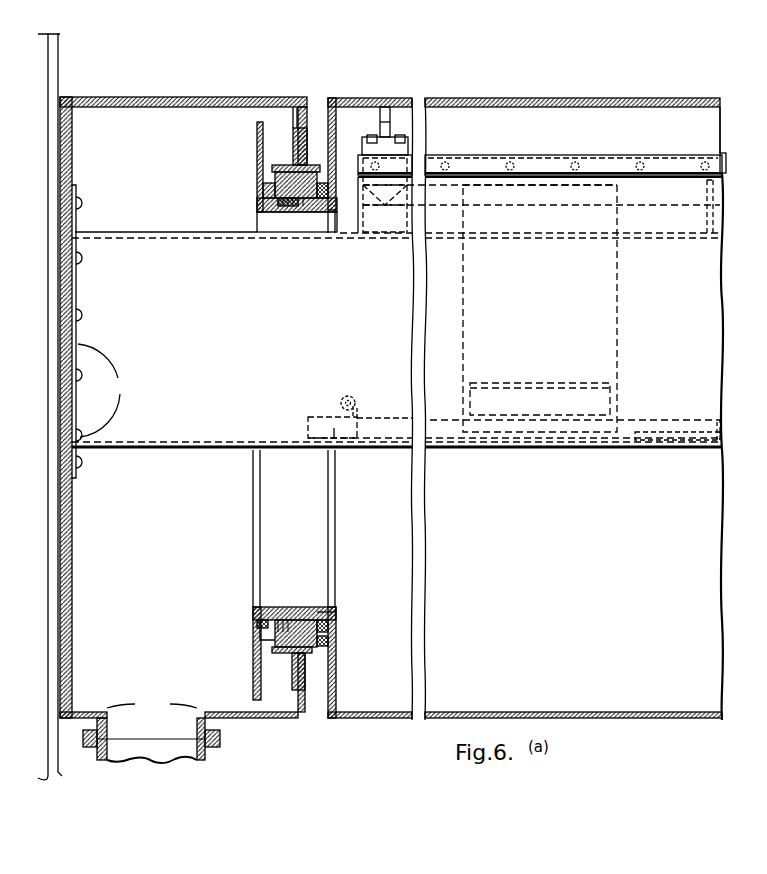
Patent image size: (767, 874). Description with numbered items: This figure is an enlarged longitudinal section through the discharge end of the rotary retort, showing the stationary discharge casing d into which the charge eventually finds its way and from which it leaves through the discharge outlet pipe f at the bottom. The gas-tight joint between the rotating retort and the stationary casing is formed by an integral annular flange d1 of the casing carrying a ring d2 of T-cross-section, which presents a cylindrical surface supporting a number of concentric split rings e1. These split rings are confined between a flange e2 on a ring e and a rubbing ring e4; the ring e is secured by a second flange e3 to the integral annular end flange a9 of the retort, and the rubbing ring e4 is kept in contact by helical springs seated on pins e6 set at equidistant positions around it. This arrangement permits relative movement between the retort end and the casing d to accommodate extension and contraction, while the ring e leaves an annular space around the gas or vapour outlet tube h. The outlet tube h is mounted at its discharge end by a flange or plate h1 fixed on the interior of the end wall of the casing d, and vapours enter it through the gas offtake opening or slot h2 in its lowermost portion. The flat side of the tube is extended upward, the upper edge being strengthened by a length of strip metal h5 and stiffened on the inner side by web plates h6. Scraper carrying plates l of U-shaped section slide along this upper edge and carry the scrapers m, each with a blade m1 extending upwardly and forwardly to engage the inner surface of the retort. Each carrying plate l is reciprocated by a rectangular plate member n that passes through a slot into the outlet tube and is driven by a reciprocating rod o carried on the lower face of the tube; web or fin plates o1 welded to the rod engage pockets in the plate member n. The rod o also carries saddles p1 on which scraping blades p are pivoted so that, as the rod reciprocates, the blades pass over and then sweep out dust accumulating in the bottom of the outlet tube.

The stationary discharge casing d is at (198, 97).
The integral annular flange d1 is at (310, 100).
The ring of T-cross-section d2 is at (297, 105).
The integral annular end flange a9 is at (337, 127).
The ring e is at (306, 212).
The concentric split rings e1 is at (287, 607).
The flange e2 is at (258, 180).
The second flange e3 is at (325, 620).
The rubbing ring e4 is at (318, 647).
The pins e6 is at (338, 212).
The scrapers m is at (408, 150).
The blade m1 is at (386, 106).
The scraper carrying plates l is at (483, 158).
The gas or vapour outlet tube h is at (212, 408).
The flange or plate h1 is at (80, 185).
The gas offtake opening or slot h2 is at (657, 440).
The strip metal h5 is at (722, 153).
The web plates h6 is at (705, 192).
The rectangular plate member n is at (618, 318).
The rod o is at (668, 421).
The web or fin plates o1 is at (567, 403).
The scraping blade p is at (356, 415).
The saddle p1 is at (338, 449).
The discharge outlet pipe f is at (151, 733).